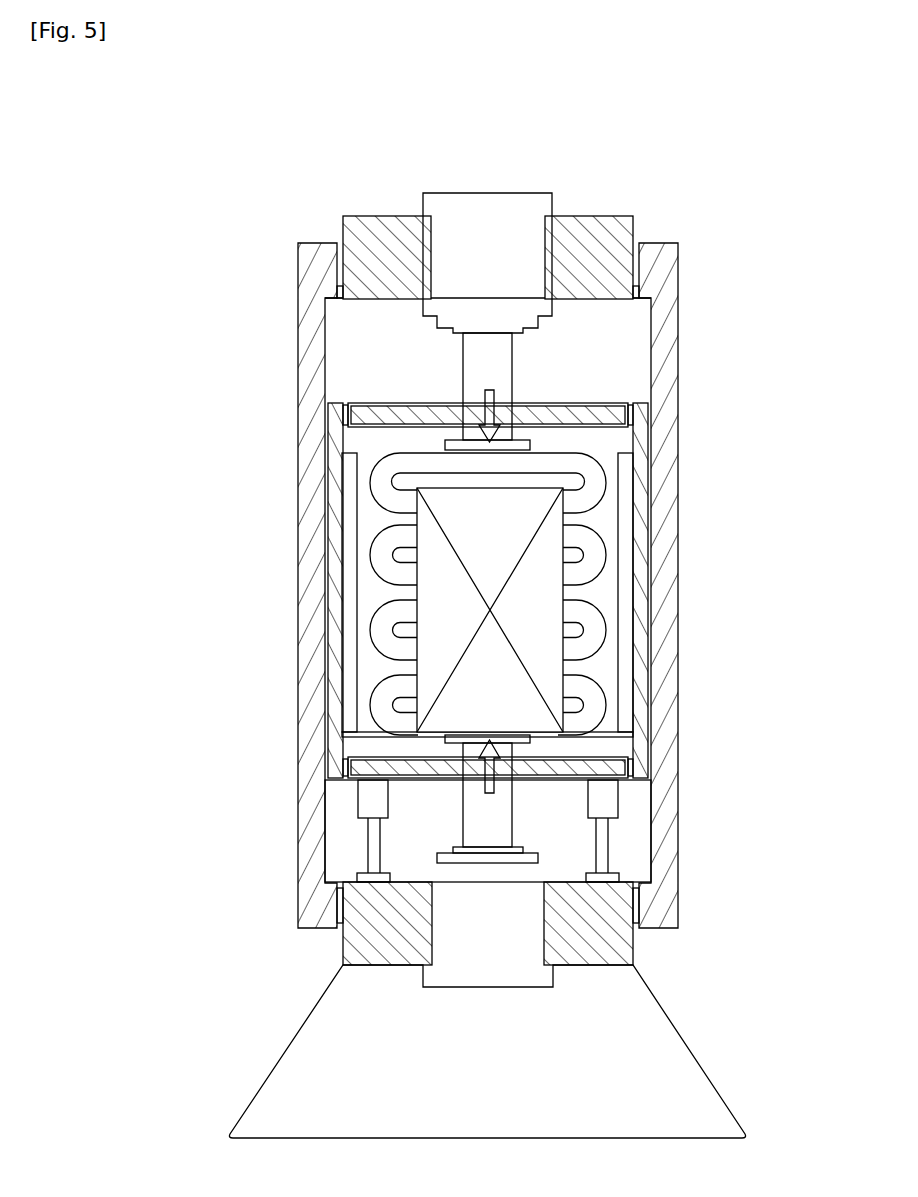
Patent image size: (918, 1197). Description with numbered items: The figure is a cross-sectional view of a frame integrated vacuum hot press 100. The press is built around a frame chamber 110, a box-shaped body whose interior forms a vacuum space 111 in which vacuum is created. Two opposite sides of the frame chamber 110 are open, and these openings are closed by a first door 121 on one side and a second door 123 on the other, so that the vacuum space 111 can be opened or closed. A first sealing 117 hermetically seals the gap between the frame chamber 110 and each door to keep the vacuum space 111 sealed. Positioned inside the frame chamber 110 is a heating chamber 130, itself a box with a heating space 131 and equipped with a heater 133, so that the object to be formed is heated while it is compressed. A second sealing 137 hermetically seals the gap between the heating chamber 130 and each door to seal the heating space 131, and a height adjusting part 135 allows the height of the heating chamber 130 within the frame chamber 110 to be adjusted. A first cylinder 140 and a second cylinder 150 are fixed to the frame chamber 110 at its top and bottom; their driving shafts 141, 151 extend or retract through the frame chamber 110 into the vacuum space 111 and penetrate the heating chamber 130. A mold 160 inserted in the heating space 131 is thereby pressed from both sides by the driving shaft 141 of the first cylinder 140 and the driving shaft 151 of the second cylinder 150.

The frame integrated vacuum hot press 100 is at (230, 170).
The frame chamber 110 is at (385, 240).
The vacuum space 111 is at (382, 350).
The first sealing 117 is at (340, 262).
The first door 121 is at (306, 433).
The second door 123 is at (672, 465).
The heating chamber 130 is at (575, 405).
The heating space 131 is at (381, 513).
The heater 133 is at (380, 630).
The height adjusting part 135 is at (600, 838).
The second sealing 137 is at (343, 402).
The first cylinder 140 is at (505, 215).
The driving shaft 141 is at (495, 353).
The second cylinder 150 is at (465, 970).
The driving shaft 151 is at (482, 813).
The mold 160 is at (467, 692).